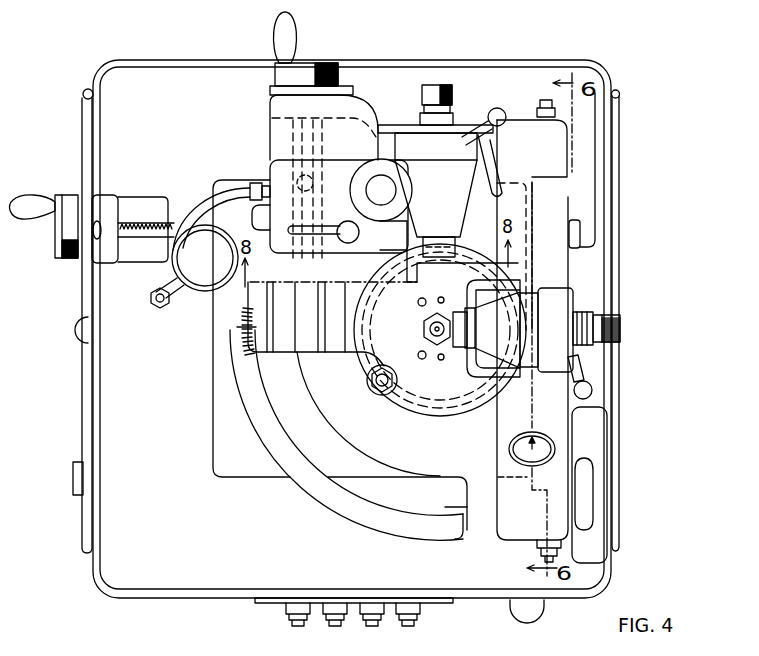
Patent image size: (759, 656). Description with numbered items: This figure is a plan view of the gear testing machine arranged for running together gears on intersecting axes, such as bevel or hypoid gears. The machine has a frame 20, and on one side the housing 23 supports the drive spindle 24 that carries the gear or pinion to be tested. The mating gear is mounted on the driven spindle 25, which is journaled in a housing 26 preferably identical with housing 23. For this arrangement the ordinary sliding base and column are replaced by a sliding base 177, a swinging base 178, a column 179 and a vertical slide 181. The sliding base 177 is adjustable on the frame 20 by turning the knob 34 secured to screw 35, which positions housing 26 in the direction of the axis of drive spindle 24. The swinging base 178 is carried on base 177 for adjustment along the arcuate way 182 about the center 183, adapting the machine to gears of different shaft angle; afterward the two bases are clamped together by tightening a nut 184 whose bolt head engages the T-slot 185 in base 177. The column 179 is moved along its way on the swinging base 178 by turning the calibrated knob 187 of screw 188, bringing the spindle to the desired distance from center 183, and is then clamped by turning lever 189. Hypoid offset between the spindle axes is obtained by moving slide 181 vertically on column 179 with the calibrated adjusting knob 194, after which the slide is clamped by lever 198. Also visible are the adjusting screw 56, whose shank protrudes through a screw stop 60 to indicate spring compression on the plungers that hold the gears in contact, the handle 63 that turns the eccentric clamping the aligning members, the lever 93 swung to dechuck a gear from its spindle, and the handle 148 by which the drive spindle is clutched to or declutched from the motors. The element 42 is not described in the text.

The frame 20 is at (167, 434).
The housing 23 is at (512, 328).
The drive spindle 24 is at (470, 322).
The driven spindle 25 is at (452, 247).
The housing 26 is at (463, 191).
The knob 34 is at (68, 200).
The screw 35 is at (171, 228).
The latch 42 is at (77, 335).
The adjusting screw 56 is at (542, 102).
The screw stop 60 is at (540, 548).
The handle 63 is at (595, 472).
The lever 93 is at (580, 365).
The handle 148 is at (538, 612).
The sliding base 177 is at (247, 468).
The swinging base 178 is at (367, 343).
The column 179 is at (278, 172).
The vertical slide 181 is at (402, 236).
The arcuate way 182 is at (353, 487).
The center 183 is at (436, 340).
The nut 184 is at (385, 394).
The T-slot 185 is at (434, 404).
The calibrated knob 187 is at (305, 70).
The screw 188 is at (300, 145).
The lever 189 is at (340, 244).
The adjusting knob 194 is at (362, 172).
The lever 198 is at (256, 222).